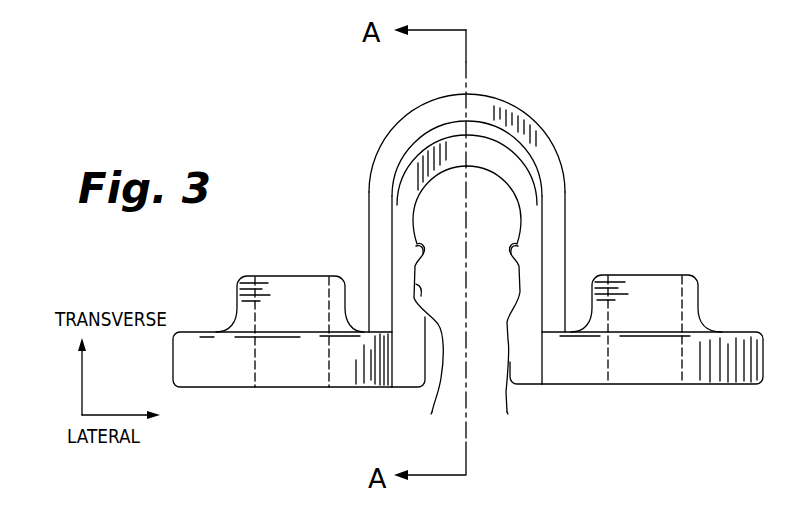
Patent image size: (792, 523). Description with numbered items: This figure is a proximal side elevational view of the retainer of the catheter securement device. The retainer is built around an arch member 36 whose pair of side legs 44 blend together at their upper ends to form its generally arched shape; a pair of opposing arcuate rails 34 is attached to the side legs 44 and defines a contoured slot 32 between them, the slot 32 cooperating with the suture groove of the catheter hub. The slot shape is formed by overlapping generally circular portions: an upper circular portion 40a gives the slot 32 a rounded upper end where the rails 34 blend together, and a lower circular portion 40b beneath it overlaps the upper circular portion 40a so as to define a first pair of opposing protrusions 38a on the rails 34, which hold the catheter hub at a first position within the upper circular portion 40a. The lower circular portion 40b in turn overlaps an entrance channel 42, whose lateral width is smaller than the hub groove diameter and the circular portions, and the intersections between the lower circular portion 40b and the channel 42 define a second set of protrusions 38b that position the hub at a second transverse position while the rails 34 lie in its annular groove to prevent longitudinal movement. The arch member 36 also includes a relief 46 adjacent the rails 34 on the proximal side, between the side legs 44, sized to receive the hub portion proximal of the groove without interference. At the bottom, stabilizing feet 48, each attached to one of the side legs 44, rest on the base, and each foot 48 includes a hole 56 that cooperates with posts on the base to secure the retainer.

The slot 32 is at (496, 196).
The rails 34 is at (408, 250).
The arch member 36 is at (533, 104).
The first pair of opposing protrusions 38a is at (422, 238).
The second set of protrusions 38b is at (447, 360).
The upper circular portion 40a is at (398, 174).
The lower circular portion 40b is at (417, 303).
The entrance channel 42 is at (506, 370).
The side legs 44 is at (377, 271).
The relief 46 is at (482, 130).
The feet 48 is at (205, 378).
The hole 56 is at (256, 388).